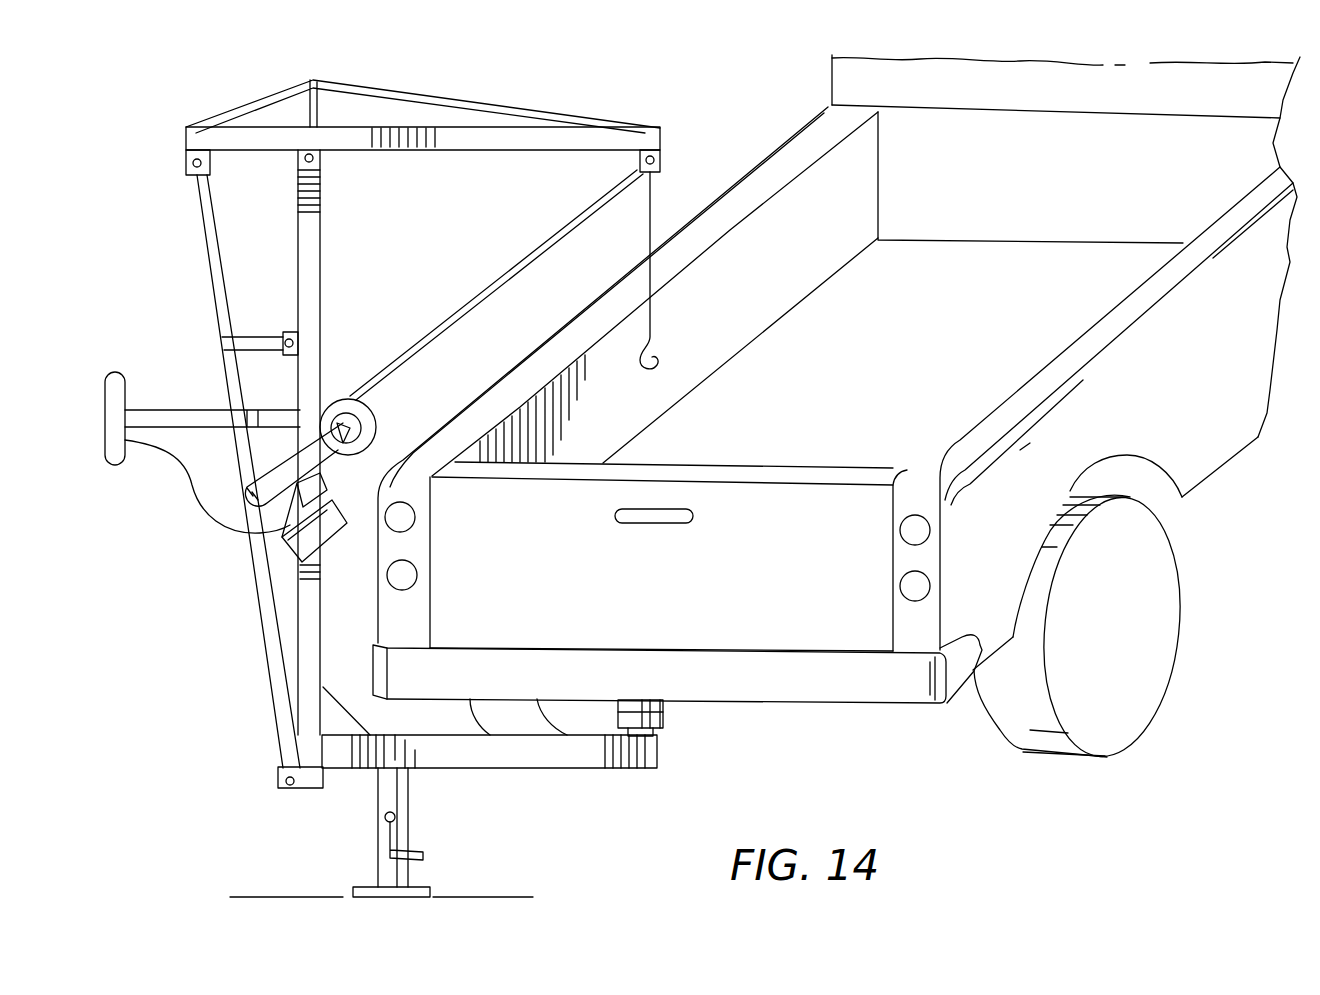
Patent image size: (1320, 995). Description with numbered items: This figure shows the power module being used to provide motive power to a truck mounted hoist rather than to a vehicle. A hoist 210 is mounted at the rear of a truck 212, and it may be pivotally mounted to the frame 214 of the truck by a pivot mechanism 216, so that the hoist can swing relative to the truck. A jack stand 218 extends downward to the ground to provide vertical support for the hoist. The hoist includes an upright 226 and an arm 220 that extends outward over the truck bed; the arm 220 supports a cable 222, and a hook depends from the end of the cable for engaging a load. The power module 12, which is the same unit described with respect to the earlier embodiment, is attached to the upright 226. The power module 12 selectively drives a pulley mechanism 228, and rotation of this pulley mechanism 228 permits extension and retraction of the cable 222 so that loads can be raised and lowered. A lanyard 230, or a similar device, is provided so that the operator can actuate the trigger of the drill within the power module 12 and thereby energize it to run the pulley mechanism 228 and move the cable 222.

The power module 12 is at (303, 533).
The hoist 210 is at (320, 303).
The truck 212 is at (1040, 361).
The frame 214 is at (757, 707).
The pivot mechanism 216 is at (667, 716).
The jack stand 218 is at (398, 798).
The arm 220 is at (521, 150).
The cable 222 is at (548, 250).
The upright 226 is at (320, 353).
The pulley mechanism 228 is at (378, 408).
The lanyard 230 is at (200, 507).